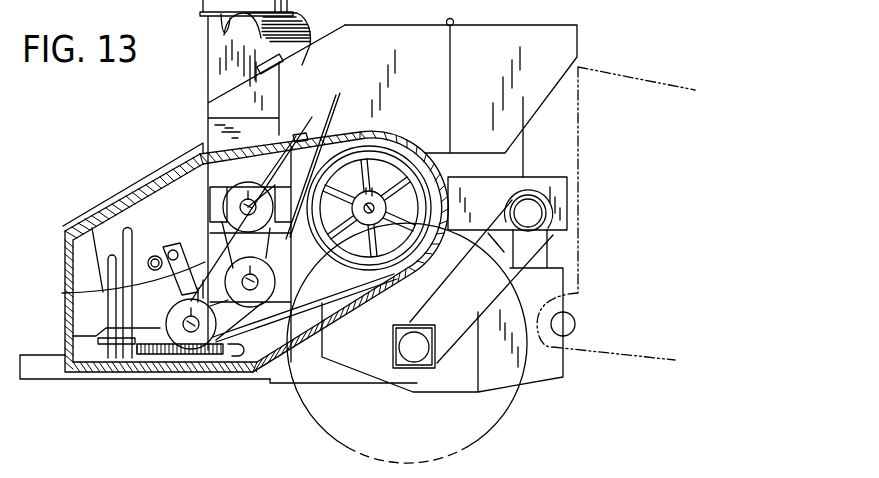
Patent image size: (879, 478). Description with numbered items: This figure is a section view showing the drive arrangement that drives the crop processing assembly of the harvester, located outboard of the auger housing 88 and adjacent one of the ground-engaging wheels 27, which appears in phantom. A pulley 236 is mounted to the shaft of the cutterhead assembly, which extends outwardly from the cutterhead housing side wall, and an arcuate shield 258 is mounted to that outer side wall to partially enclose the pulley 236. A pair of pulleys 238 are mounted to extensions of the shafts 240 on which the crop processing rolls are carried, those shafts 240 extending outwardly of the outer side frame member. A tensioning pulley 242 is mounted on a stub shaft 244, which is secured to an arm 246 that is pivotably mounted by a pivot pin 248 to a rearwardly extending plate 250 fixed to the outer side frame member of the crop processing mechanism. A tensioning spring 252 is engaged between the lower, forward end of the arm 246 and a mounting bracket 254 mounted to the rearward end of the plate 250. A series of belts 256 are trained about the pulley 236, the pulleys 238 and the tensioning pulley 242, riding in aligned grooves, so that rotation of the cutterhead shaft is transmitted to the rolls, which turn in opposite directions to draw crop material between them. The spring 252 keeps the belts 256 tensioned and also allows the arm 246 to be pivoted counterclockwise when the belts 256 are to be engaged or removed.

The ground-engaging wheels 27 is at (503, 428).
The auger housing 88 is at (96, 217).
The pulley 236 is at (360, 300).
The pulleys 238 is at (213, 222).
The shafts 240 is at (300, 134).
The tensioning pulley 242 is at (222, 343).
The stub shaft 244 is at (188, 328).
The arm 246 is at (113, 285).
The pivot pin 248 is at (172, 247).
The plate 250 is at (143, 232).
The tensioning spring 252 is at (237, 346).
The mounting bracket 254 is at (105, 362).
The belts 256 is at (329, 150).
The arcuate shield 258 is at (402, 148).